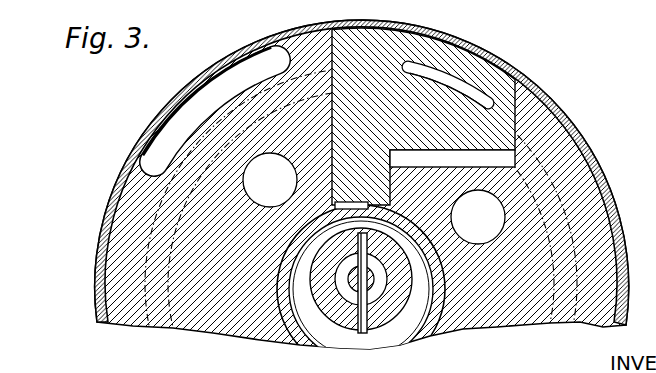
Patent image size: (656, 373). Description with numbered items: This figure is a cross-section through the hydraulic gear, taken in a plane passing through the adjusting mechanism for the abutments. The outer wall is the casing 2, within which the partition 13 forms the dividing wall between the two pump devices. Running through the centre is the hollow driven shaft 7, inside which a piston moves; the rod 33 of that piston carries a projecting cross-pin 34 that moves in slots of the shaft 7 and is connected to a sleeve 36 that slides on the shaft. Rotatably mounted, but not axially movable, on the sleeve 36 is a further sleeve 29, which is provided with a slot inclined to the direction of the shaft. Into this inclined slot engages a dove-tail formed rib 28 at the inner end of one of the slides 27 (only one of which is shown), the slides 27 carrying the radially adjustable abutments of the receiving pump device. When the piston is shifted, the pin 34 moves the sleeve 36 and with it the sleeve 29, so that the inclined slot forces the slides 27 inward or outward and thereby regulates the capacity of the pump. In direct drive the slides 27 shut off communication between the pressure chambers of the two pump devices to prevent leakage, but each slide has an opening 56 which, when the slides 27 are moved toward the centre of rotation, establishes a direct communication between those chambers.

The casing 2 is at (546, 93).
The driven shaft 7 is at (338, 327).
The partition 13 is at (116, 246).
The slides 27 is at (450, 68).
The dove-tail formed rib 28 is at (340, 190).
The axially movable sleeve 29 is at (428, 313).
The piston rod 33 is at (373, 312).
The cross-pin 34 is at (356, 330).
The sleeve 36 is at (396, 314).
The opening 56 is at (466, 86).